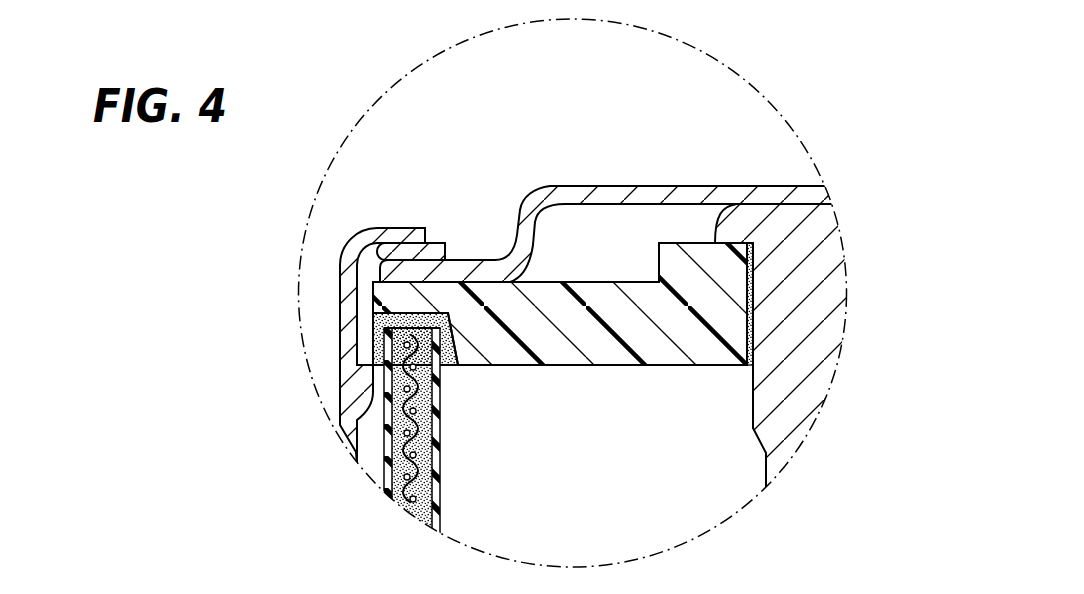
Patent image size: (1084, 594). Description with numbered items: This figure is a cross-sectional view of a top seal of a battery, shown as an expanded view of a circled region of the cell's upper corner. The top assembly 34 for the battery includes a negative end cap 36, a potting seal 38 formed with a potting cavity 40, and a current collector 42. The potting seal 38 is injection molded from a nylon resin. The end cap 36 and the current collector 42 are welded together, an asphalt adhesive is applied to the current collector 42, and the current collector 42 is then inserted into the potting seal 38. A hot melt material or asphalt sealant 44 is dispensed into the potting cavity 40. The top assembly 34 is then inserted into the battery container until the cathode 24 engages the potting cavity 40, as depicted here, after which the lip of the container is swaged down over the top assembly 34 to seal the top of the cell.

The cathode 24 is at (393, 453).
The top assembly 34 is at (600, 280).
The negative end cap 36 is at (527, 200).
The potting seal 38 is at (365, 275).
The potting cavity 40 is at (383, 322).
The current collector 42 is at (823, 273).
The asphalt sealant 44 is at (380, 347).